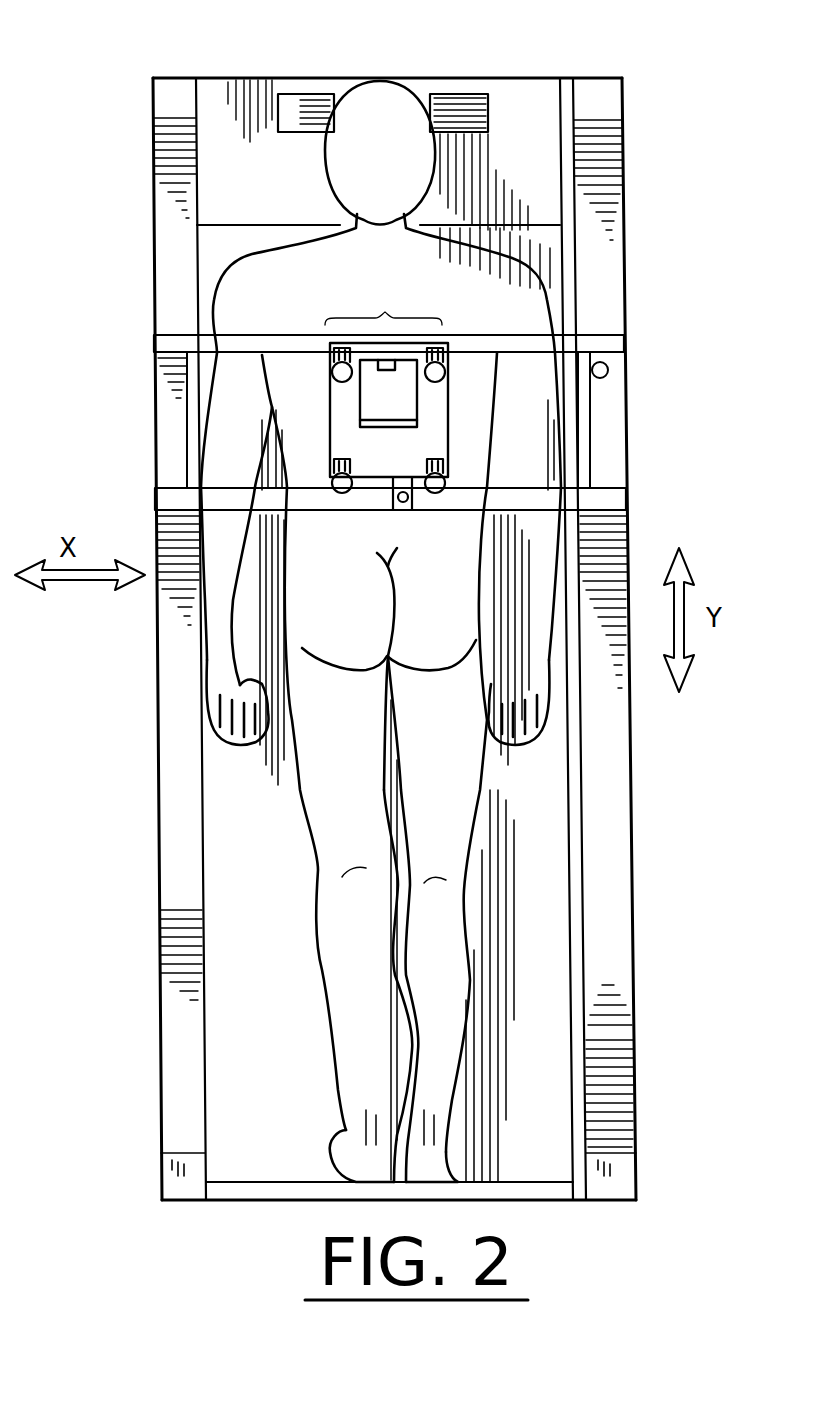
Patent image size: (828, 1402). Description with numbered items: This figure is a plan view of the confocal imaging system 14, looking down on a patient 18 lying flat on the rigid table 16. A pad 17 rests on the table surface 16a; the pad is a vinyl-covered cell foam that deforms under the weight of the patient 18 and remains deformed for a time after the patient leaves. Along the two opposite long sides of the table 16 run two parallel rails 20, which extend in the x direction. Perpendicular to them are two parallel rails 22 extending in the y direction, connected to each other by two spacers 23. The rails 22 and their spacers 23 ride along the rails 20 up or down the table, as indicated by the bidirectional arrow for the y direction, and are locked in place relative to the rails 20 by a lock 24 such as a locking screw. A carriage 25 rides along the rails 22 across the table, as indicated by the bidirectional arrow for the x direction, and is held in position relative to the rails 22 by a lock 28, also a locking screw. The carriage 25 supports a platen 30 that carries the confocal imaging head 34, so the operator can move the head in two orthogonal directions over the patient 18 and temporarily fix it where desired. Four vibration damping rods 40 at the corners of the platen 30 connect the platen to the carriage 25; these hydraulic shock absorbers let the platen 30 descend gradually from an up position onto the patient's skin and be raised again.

The system 14 is at (352, 23).
The rigid table 16 is at (251, 80).
The table surface 16a is at (153, 82).
The pad 17 is at (453, 96).
The patient 18 is at (284, 248).
The parallel rails 20 is at (156, 633).
The parallel rails 22 is at (238, 335).
The spacers 23 is at (154, 395).
The lock 24 is at (609, 368).
The carriage 25 is at (383, 301).
The lock 28 is at (408, 515).
The platen 30 is at (329, 410).
The confocal imaging head 34 is at (378, 430).
The vibration damping rods 40 is at (443, 345).